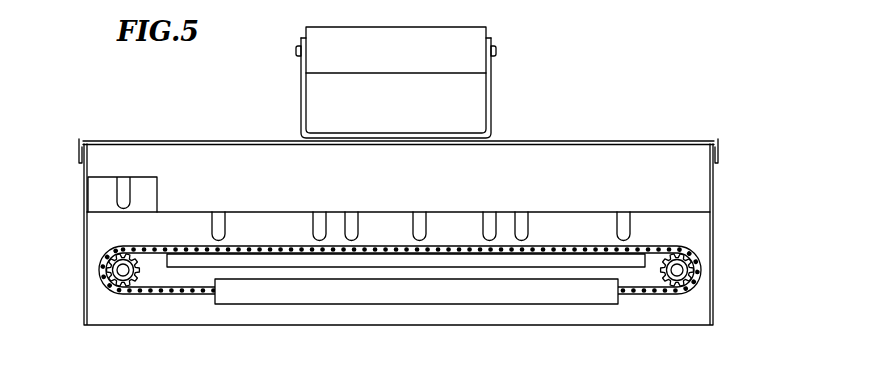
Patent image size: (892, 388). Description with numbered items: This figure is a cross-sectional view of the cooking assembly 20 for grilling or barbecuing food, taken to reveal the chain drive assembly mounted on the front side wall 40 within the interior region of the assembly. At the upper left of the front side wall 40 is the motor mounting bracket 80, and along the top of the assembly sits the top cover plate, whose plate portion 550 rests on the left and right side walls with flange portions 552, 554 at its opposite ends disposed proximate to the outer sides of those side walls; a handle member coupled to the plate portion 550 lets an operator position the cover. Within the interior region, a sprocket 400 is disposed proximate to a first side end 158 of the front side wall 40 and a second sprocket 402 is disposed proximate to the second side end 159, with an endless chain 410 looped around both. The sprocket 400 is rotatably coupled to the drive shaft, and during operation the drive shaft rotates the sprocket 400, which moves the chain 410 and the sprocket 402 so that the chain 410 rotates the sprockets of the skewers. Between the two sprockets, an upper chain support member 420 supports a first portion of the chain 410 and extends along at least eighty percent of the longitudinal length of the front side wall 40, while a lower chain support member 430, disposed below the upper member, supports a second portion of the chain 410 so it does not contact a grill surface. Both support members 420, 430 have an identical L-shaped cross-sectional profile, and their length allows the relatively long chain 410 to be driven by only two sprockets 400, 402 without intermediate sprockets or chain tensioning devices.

The cooking assembly 20 is at (545, 84).
The front side wall 40 is at (567, 223).
The motor mounting bracket 80 is at (142, 195).
The first side end 158 is at (100, 288).
The second side end 159 is at (698, 286).
The sprocket 400 is at (122, 292).
The sprocket 402 is at (666, 292).
The endless chain 410 is at (158, 249).
The chain support member 420 is at (364, 259).
The chain support member 430 is at (328, 293).
The plate portion 550 is at (171, 140).
The flange portion 552 is at (720, 149).
The flange portion 554 is at (78, 151).